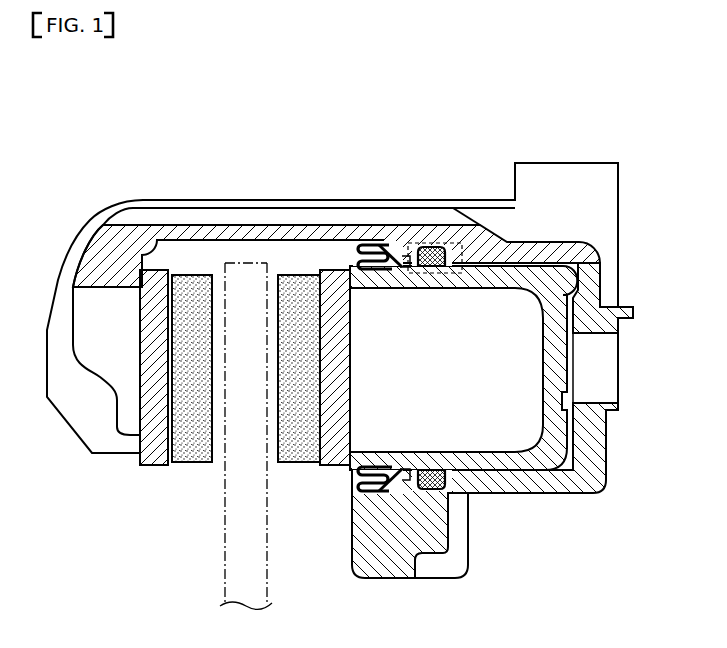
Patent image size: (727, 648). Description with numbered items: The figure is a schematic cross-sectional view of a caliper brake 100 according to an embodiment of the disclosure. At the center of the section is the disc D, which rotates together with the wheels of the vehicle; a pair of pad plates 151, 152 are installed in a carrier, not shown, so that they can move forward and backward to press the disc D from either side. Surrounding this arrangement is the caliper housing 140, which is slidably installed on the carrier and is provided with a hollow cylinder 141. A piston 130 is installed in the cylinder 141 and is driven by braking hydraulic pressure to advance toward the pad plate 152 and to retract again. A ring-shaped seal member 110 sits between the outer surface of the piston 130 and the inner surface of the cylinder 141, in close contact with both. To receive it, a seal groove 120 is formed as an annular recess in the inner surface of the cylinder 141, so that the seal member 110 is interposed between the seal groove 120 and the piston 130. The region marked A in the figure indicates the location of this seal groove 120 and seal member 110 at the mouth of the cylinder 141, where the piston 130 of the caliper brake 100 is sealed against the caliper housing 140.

The caliper brake 100 is at (339, 126).
The seal member 110 is at (433, 243).
The seal groove 120 is at (444, 250).
The piston 130 is at (497, 242).
The caliper housing 140 is at (533, 240).
The cylinder 141 is at (570, 258).
The pad plate 151 is at (191, 455).
The pad plate 152 is at (300, 455).
The sealing region A is at (410, 245).
The disc D is at (223, 530).